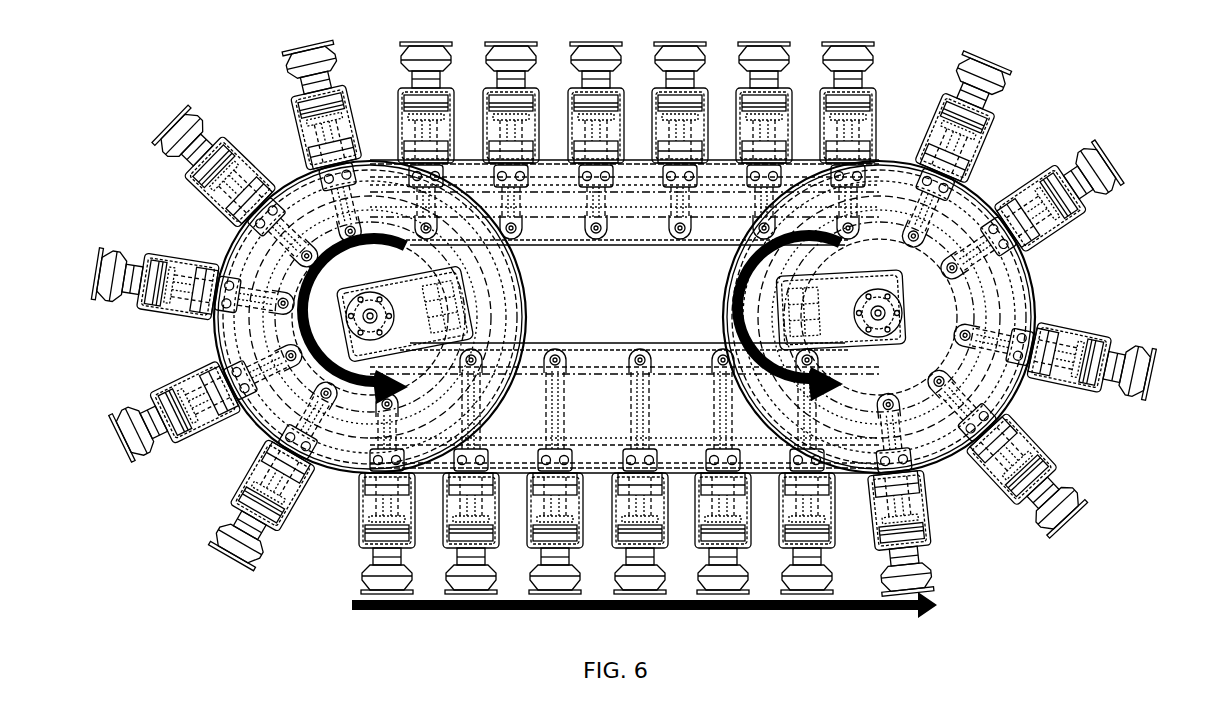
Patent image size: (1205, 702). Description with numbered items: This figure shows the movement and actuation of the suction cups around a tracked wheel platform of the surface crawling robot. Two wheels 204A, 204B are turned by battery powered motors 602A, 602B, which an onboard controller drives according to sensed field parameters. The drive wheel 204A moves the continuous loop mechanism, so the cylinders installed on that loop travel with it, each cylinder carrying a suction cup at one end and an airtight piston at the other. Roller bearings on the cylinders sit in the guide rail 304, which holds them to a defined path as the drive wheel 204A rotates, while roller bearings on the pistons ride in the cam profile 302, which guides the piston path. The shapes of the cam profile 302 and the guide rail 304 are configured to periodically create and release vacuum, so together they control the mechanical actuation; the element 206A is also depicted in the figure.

The cam profile 302 is at (990, 196).
The guide rail 304 is at (1013, 300).
The motor 602A is at (345, 322).
The motor 602B is at (893, 332).
The drive wheel 204A is at (347, 473).
The wheel 204B is at (942, 467).
The carrier unit 206A is at (932, 540).